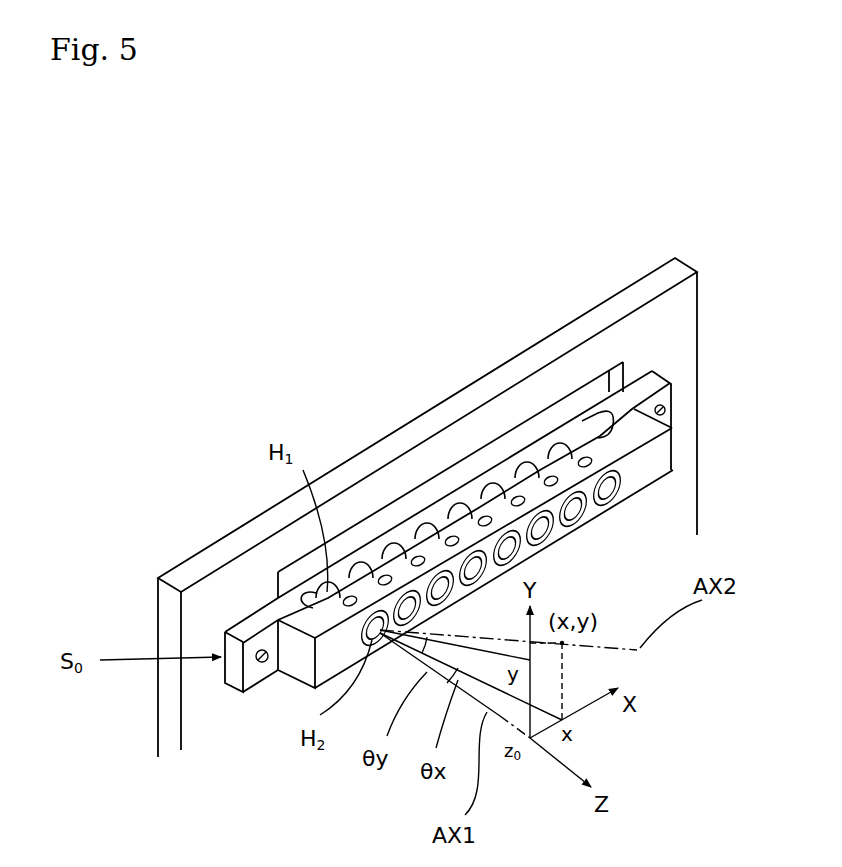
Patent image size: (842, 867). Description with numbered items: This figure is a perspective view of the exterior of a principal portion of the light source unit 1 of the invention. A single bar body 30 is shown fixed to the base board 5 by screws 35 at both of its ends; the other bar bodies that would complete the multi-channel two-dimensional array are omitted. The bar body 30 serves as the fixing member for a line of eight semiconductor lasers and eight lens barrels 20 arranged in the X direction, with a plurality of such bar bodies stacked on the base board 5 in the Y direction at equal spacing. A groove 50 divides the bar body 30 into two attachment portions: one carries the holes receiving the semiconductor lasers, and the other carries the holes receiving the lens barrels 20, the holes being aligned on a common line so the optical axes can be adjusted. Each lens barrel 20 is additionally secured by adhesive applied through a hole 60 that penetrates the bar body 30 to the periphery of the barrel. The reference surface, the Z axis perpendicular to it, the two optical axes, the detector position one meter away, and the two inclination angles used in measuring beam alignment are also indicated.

The light source unit 1 is at (419, 507).
The base board 5 is at (445, 420).
The lens barrel 20 is at (543, 548).
The bar body 30 is at (424, 484).
The screws 35 is at (666, 412).
The groove 50 is at (588, 426).
The hole 60 is at (548, 477).